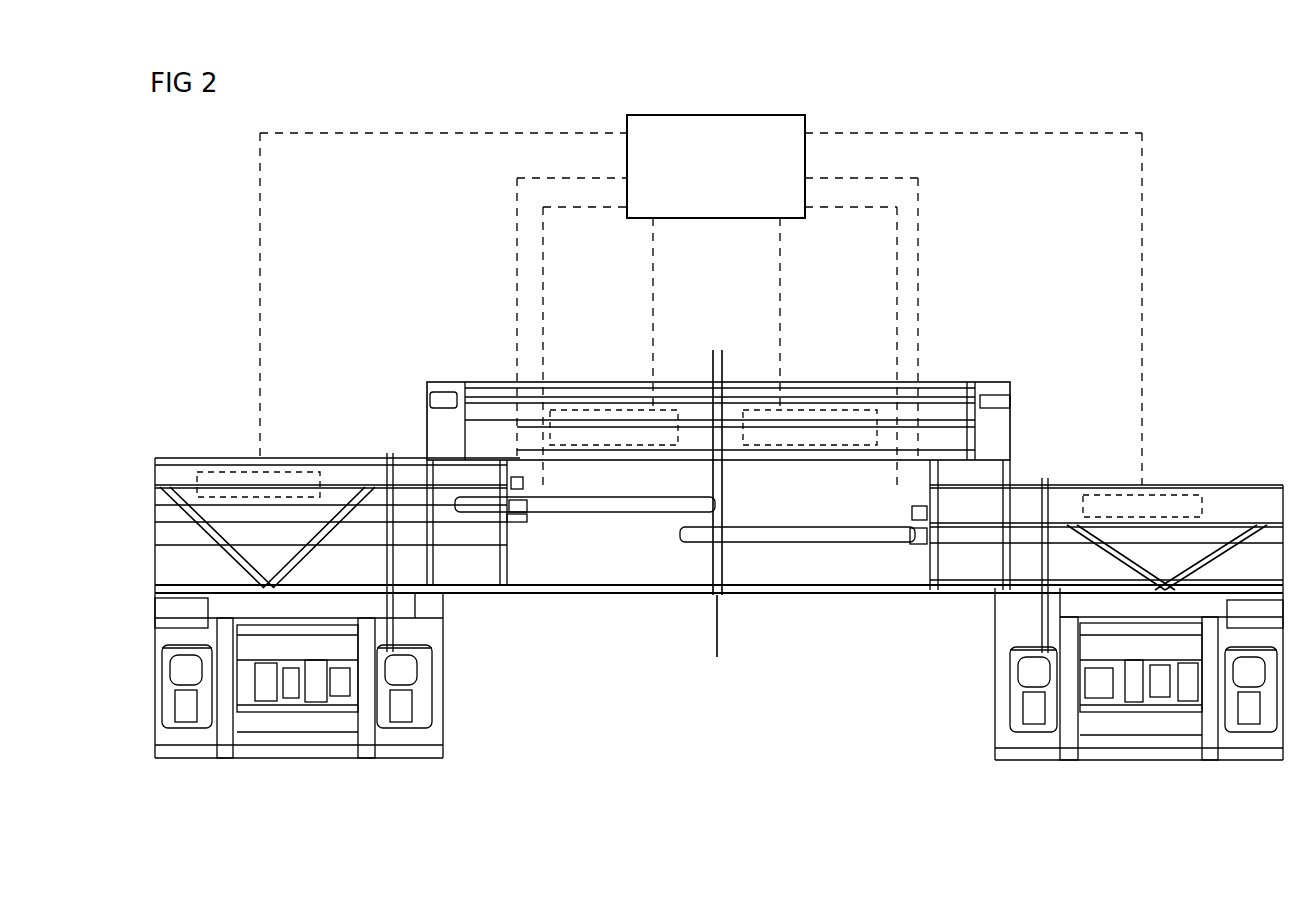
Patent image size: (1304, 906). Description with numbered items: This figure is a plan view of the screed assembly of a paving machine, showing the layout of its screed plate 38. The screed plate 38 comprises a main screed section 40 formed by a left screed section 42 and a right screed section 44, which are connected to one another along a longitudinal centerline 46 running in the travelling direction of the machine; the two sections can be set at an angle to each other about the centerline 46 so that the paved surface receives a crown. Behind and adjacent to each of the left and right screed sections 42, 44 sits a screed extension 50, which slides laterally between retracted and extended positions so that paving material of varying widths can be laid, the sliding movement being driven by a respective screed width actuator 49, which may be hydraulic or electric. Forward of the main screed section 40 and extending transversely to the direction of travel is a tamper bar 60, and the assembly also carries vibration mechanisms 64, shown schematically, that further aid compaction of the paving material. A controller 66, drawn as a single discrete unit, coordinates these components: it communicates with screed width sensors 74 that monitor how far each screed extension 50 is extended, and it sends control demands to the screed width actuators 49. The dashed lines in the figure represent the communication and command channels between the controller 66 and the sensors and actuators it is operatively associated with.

The screed plate 38 is at (950, 253).
The main screed section 40 is at (772, 600).
The left screed section 42 is at (567, 597).
The right screed section 44 is at (880, 597).
The longitudinal centerline 46 is at (722, 372).
The screed width actuator 49 is at (596, 510).
The screed extension 50 is at (442, 672).
The tamper bar 60 is at (588, 392).
The vibration mechanism 64 is at (670, 376).
The controller 66 is at (697, 185).
The screed width sensor 74 is at (512, 485).